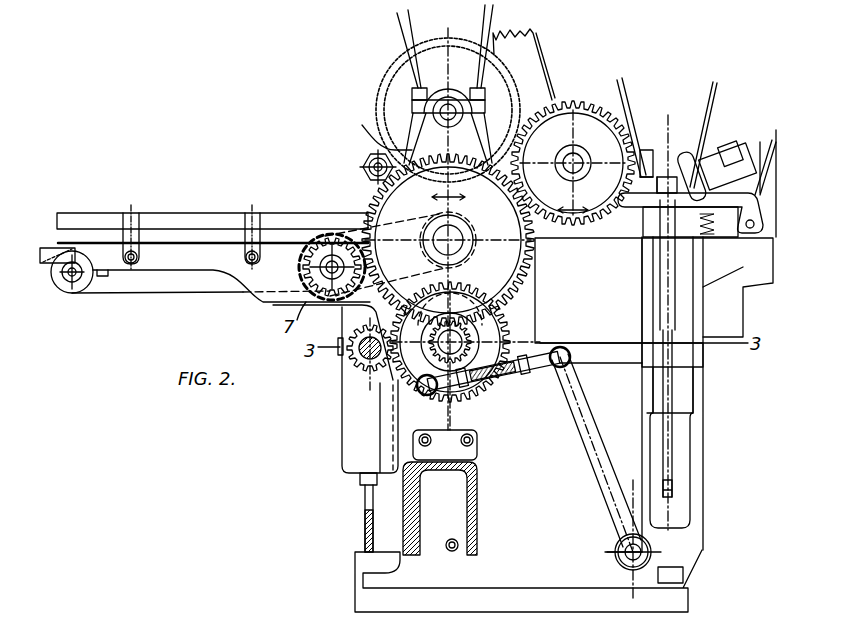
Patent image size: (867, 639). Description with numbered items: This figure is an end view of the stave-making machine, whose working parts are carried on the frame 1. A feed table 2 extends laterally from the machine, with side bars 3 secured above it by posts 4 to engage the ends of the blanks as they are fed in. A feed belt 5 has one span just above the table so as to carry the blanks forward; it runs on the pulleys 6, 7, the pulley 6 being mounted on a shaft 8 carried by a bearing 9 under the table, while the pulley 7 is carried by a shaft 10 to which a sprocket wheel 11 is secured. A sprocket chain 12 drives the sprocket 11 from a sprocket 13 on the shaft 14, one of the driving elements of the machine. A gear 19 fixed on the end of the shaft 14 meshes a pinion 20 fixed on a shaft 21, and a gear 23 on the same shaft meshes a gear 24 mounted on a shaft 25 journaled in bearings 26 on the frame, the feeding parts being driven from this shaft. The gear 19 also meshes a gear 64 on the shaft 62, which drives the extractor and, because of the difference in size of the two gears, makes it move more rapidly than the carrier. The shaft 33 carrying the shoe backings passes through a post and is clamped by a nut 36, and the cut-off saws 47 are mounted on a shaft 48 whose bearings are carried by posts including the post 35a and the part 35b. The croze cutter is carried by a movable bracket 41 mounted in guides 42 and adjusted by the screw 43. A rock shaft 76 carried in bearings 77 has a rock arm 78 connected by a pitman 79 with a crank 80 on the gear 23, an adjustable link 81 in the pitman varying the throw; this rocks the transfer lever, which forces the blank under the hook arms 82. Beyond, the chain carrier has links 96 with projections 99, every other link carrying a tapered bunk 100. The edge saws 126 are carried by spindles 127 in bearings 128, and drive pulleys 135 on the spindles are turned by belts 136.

The frame 1 is at (522, 603).
The feed table 2 is at (170, 265).
The side bars 3 is at (160, 225).
The posts 4 is at (260, 213).
The feed belt 5 is at (130, 296).
The pulley 6 is at (67, 289).
The pulley 7 is at (446, 231).
The shaft 8 is at (60, 280).
The bearing 9 is at (82, 275).
The shaft 10 is at (312, 284).
The sprocket wheel 11 is at (304, 263).
The sprocket chain 12 is at (343, 243).
The sprocket 13 is at (472, 248).
The shaft 14 is at (470, 235).
The gear 19 is at (520, 264).
The pinion 20 is at (465, 336).
The shaft 21 is at (458, 350).
The gear 23 is at (467, 287).
The gear 24 is at (368, 362).
The shaft 25 is at (362, 356).
The bearings 26 is at (346, 318).
The shaft 33 is at (365, 162).
The post 35a is at (458, 78).
The bracket arm 35b is at (474, 137).
The nut 36 is at (371, 133).
The movable bracket 41 is at (349, 408).
The guides 42 is at (390, 427).
The screw 43 is at (366, 481).
The saws 47 is at (386, 110).
The shaft 48 is at (446, 121).
The shaft 62 is at (581, 163).
The gear 64 is at (576, 104).
The rock shaft 76 is at (622, 560).
The bearings 77 is at (614, 550).
The rock arm 78 is at (592, 468).
The pitman 79 is at (518, 379).
The crank 80 is at (427, 395).
The adjustable link 81 is at (495, 390).
The hook arms 82 is at (735, 200).
The links 96 is at (662, 300).
The projections 99 is at (683, 399).
The bunk 100 is at (673, 483).
The edge saws 126 is at (620, 100).
The spindles 127 is at (652, 158).
The bearings 128 is at (752, 160).
The drive pulleys 135 is at (762, 150).
The belts 136 is at (535, 58).